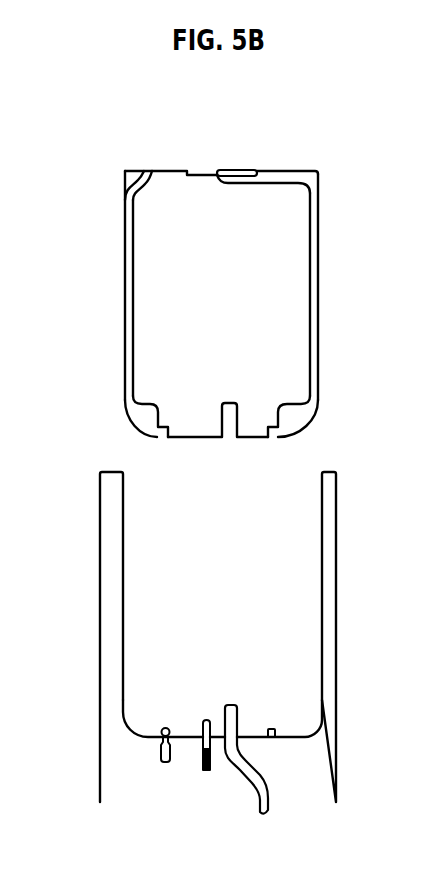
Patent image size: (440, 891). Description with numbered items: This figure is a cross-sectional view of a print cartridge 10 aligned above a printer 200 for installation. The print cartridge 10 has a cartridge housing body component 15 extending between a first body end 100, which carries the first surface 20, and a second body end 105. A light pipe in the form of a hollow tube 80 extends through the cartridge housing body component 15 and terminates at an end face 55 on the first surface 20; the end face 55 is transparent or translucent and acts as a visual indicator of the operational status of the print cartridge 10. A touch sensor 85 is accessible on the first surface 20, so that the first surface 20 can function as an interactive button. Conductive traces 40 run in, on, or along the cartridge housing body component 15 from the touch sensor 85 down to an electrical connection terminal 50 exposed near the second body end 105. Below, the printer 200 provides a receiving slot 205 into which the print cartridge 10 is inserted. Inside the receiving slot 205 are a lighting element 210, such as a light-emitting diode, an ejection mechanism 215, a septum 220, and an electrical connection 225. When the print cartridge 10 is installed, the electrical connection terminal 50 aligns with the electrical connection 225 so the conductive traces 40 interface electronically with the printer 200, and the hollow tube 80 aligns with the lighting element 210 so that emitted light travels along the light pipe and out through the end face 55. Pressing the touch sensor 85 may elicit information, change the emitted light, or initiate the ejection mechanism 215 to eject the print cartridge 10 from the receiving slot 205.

The print cartridge 10 is at (339, 198).
The cartridge housing body component 15 is at (140, 422).
The first surface 20 is at (283, 168).
The conductive traces 40 is at (309, 312).
The electrical connection terminal 50 is at (273, 427).
The end face 55 is at (150, 170).
The hollow tube 80 is at (130, 260).
The touch sensor 85 is at (200, 170).
The first body end 100 is at (166, 162).
The second body end 105 is at (191, 446).
The printer 200 is at (108, 698).
The receiving slot 205 is at (303, 683).
The lighting element 210 is at (160, 757).
The ejection mechanism 215 is at (202, 755).
The septum 220 is at (231, 758).
The electrical connection 225 is at (282, 733).